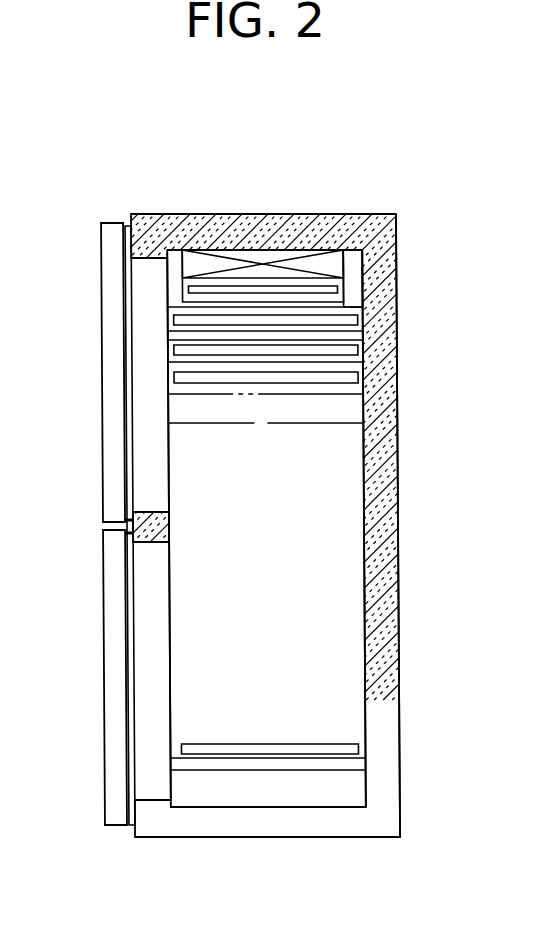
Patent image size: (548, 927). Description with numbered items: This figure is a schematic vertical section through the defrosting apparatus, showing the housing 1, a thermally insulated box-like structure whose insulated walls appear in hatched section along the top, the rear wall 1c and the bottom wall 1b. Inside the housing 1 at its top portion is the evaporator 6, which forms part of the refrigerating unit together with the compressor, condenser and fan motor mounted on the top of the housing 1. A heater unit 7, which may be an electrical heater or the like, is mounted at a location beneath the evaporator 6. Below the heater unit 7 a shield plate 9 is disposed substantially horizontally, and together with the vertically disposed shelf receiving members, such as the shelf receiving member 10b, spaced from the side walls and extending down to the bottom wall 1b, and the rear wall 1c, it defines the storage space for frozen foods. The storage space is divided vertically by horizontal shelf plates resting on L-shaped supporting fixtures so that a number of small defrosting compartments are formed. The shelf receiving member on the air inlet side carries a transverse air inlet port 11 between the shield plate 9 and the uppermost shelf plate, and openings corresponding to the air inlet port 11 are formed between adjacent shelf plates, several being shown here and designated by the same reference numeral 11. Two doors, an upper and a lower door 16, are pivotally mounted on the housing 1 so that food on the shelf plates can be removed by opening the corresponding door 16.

The housing 1 is at (180, 240).
The bottom wall 1b is at (225, 806).
The rear wall 1c is at (363, 541).
The evaporator 6 is at (250, 258).
The heater unit 7 is at (295, 290).
The shield plate 9 is at (350, 303).
The shelf receiving member 10b is at (167, 478).
The air inlet port 11 is at (212, 320).
The door 16 is at (112, 228).